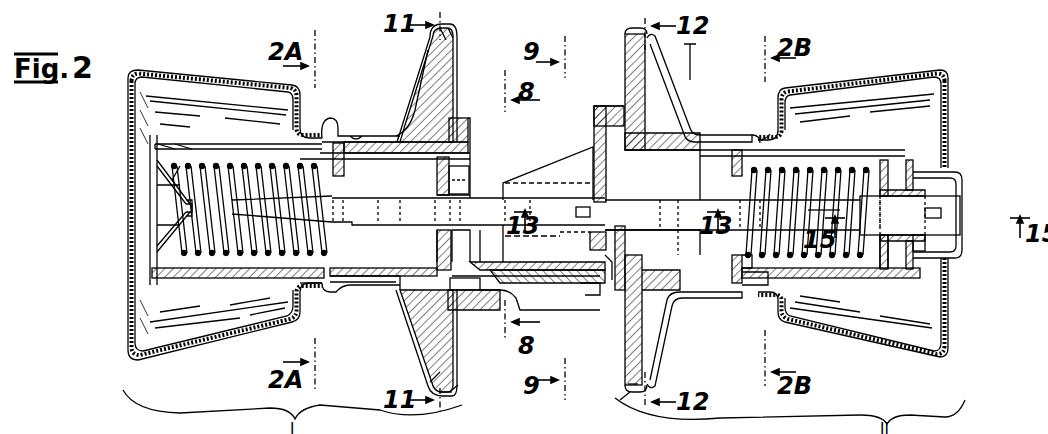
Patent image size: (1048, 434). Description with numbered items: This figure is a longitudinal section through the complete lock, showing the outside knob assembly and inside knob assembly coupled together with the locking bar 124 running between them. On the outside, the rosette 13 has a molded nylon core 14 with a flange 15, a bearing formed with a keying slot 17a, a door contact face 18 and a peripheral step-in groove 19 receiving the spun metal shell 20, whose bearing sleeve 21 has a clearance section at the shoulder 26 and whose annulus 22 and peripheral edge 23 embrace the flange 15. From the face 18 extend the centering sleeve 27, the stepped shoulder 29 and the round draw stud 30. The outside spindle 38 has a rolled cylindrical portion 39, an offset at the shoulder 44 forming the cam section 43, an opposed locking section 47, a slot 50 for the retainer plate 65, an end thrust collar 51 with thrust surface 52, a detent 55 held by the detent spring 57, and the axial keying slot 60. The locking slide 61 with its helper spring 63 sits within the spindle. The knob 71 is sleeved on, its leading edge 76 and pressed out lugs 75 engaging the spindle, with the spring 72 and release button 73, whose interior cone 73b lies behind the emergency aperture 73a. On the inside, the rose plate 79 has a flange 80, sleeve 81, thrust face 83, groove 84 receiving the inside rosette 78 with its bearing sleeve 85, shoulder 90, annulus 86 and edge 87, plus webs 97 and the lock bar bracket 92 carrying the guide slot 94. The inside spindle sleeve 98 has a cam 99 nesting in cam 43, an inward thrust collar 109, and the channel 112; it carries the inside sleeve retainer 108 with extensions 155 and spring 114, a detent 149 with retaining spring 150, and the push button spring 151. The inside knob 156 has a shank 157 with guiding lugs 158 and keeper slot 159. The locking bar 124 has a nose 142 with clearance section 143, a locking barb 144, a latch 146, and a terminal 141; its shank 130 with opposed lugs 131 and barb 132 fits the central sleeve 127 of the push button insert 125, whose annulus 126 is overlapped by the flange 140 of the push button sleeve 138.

The knob 71 is at (232, 81).
The release button 73 is at (150, 182).
The interior cone 73b is at (186, 208).
The emergency aperture 73a is at (150, 222).
The axially directed slot 60 is at (228, 144).
The nose 142 is at (218, 165).
The outside spindle 38 is at (246, 278).
The angular clearance section 143 is at (272, 278).
The spring 72 is at (184, 166).
The pressed out lugs 75 is at (318, 134).
The detent spring 57 is at (348, 160).
The thrust bearing surface 52 is at (400, 159).
The end thrust collar 51 is at (396, 128).
The rosette core 14 is at (440, 112).
The outside rosette 13 is at (410, 82).
The step-in groove 19 is at (450, 32).
The cylindrically outlined portion 39 is at (402, 154).
The door contact face 18 is at (468, 140).
The single slot 50 is at (470, 157).
The parti-cylindrical locking section 47 is at (462, 178).
The outside sleeve retainer plate 65 is at (469, 182).
The locking slide 61 is at (437, 180).
The draw stud 30 is at (478, 244).
The helper spring 63 is at (432, 262).
The knob locking dog or detent 55 is at (345, 268).
The shoulder 44 is at (474, 293).
The stepped shoulder 29 is at (508, 298).
The centering sleeve 27 is at (550, 285).
The cam section 43 is at (582, 288).
The sleeve retainer spring 114 is at (605, 300).
The outside rosette shell 20 is at (432, 337).
The keying spline or slot 17a is at (412, 320).
The flange 15 is at (428, 366).
The peripheral edge 23 is at (458, 386).
The annulus 22 is at (452, 396).
The leading edge 76 is at (390, 292).
The bearing sleeve 21 is at (343, 294).
The shoulder 26 is at (314, 294).
The webs 97 is at (548, 178).
The locking barb 144 is at (582, 207).
The lock bar guide slot 94 is at (590, 234).
The cam 99 is at (510, 238).
The terminal 141 is at (590, 244).
The extensions 155 is at (594, 140).
The door contacting face 83 is at (594, 128).
The lock bar bracket 92 is at (594, 108).
The flange 80 is at (625, 60).
The step-in groove 84 is at (625, 38).
The inside rose plate 79 is at (625, 98).
The inside rosette 78 is at (676, 74).
The inward thrust collar 109 is at (690, 90).
The annulus 86 is at (622, 394).
The peripheral edge 87 is at (627, 382).
The sleeve 81 is at (648, 292).
The inside sleeve retainer 108 is at (630, 254).
The latch 146 is at (640, 200).
The retaining spring 150 is at (690, 194).
The detent 149 is at (732, 172).
The guiding lugs 158 is at (730, 144).
The bearing sleeve 85 is at (758, 142).
The shoulder 90 is at (768, 134).
The locking bar 124 is at (772, 202).
The keeper slot 159 is at (746, 292).
The shank 157 is at (748, 294).
The inside knob 156 is at (820, 354).
The axially directed channel 112 is at (788, 152).
The push button spring 151 is at (812, 168).
The inside spindle sleeve 98 is at (848, 280).
The annulus 126 is at (900, 280).
The flange 140 is at (880, 160).
The central sleeve 127 is at (920, 188).
The shank 130 is at (912, 224).
The opposed lugs 131 is at (860, 223).
The barb 132 is at (941, 218).
The push button insert 125 is at (931, 246).
The push button sleeve 138 is at (962, 180).